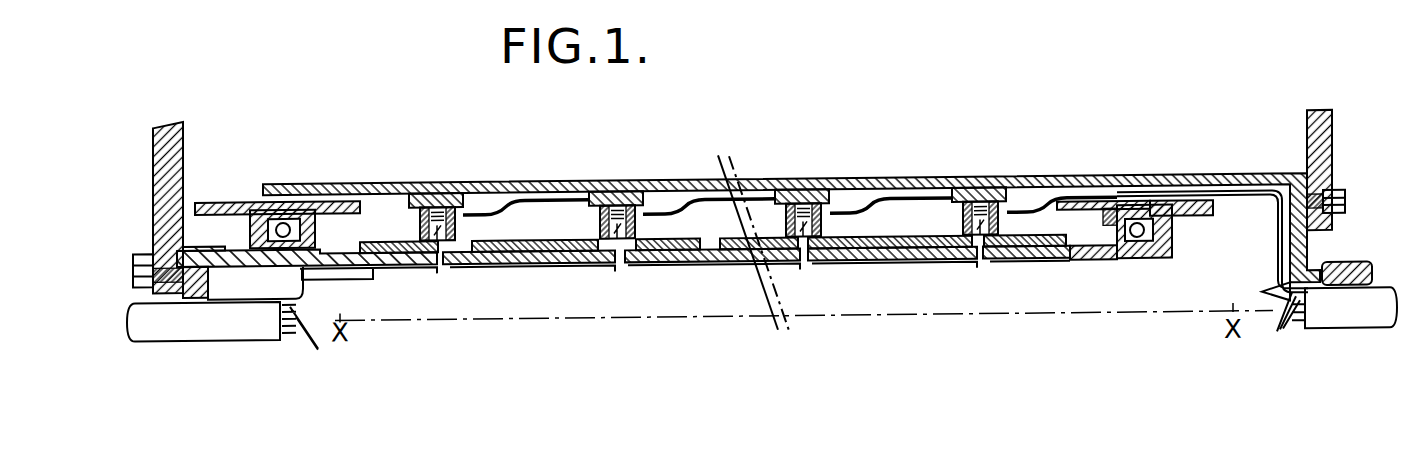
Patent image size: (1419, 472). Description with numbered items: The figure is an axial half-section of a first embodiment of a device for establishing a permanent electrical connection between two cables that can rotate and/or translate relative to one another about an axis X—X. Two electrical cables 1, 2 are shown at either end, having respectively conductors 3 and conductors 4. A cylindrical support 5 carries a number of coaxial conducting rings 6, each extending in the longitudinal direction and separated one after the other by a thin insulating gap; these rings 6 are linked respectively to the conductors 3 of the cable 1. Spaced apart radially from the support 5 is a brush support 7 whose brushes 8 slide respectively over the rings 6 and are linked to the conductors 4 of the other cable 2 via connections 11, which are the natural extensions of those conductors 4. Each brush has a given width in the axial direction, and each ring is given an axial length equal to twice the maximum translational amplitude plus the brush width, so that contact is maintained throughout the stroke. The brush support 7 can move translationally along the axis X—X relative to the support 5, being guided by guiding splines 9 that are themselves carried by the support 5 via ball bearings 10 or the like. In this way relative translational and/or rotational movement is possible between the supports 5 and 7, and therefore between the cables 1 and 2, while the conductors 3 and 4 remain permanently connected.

The electrical cable 1 is at (220, 322).
The electrical cable 2 is at (1368, 325).
The conductors 3 is at (306, 335).
The conductors 4 is at (1282, 310).
The cylindrical support 5 is at (577, 262).
The coaxial conducting rings 6 is at (484, 258).
The brush support 7 is at (938, 193).
The brushes 8 is at (438, 240).
The guiding splines 9 is at (220, 207).
The ball bearings 10 is at (262, 206).
The connections 11 is at (557, 206).